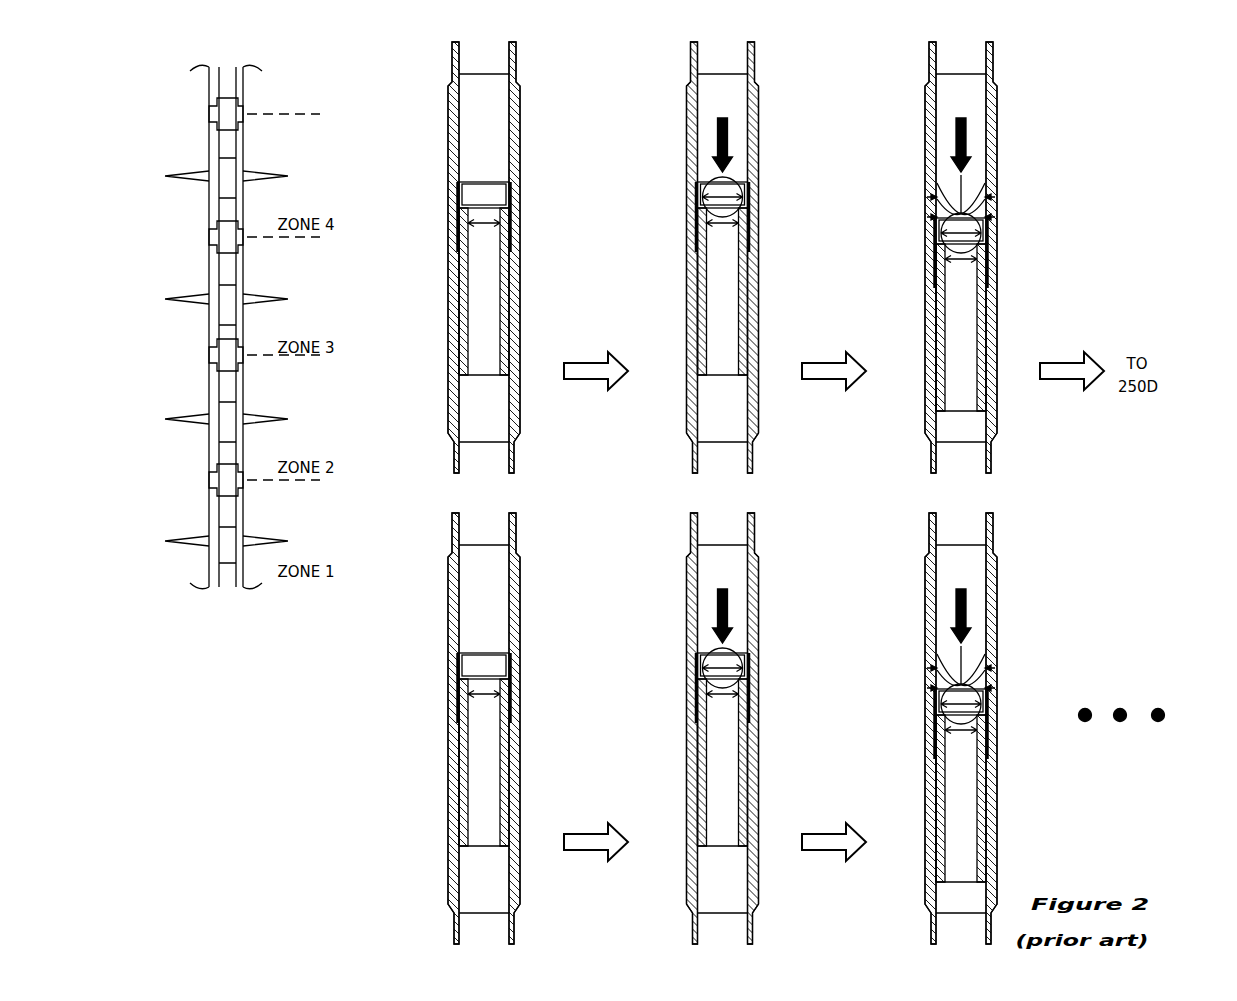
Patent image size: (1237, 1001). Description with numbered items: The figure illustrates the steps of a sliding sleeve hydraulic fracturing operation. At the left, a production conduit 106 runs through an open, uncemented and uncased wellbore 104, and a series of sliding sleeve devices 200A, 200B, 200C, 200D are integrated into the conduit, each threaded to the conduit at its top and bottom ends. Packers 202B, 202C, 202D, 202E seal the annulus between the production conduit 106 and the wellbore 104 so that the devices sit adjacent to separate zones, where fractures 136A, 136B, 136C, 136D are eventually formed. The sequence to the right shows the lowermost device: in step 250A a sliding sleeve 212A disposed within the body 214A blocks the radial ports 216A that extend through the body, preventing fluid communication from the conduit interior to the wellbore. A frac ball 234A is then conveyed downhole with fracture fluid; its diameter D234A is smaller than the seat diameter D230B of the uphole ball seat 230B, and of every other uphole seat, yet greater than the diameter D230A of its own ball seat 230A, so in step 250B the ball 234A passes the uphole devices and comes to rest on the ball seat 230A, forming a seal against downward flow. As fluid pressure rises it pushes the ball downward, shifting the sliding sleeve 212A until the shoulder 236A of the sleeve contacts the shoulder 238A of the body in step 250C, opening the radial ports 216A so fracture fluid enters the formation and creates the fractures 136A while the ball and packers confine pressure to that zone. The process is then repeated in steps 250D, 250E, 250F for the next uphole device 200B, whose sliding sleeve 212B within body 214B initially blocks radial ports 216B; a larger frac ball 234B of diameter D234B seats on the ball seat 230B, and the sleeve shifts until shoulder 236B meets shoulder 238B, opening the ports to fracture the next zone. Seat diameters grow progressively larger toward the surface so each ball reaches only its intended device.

The wellbore 104 is at (245, 90).
The production conduit 106 is at (208, 82).
The fractures 136A is at (263, 537).
The fractures 136B is at (263, 415).
The fractures 136C is at (263, 295).
The fractures 136D is at (263, 172).
The sliding sleeve device 200A is at (215, 556).
The sliding sleeve device 200B is at (215, 437).
The sliding sleeve device 200C is at (215, 317).
The sliding sleeve device 200D is at (215, 192).
The packer 202B is at (209, 480).
The packer 202C is at (209, 355).
The packer 202D is at (209, 237).
The packer 202E is at (209, 114).
The sliding sleeve 212A is at (508, 247).
The sliding sleeve 212B is at (759, 780).
The body 214A is at (452, 127).
The body 214B is at (699, 728).
The radial ports 216A is at (518, 217).
The radial ports 216B is at (782, 680).
The ball seat 230A is at (458, 203).
The ball seat 230B is at (695, 678).
The frac ball 234A is at (709, 182).
The frac ball 234B is at (839, 660).
The shoulder 236A is at (458, 252).
The shoulder 236B is at (692, 732).
The shoulder 238A is at (458, 295).
The shoulder 238B is at (666, 780).
The step 250A is at (484, 268).
The step 250B is at (723, 268).
The step 250C is at (961, 268).
The step 250D is at (484, 739).
The step 250E is at (723, 739).
The step 250F is at (961, 739).
The diameter of ball seat D230A is at (503, 228).
The diameter of ball seat D230B is at (752, 728).
The diameter of frac ball D234A is at (724, 196).
The diameter of frac ball D234B is at (869, 672).